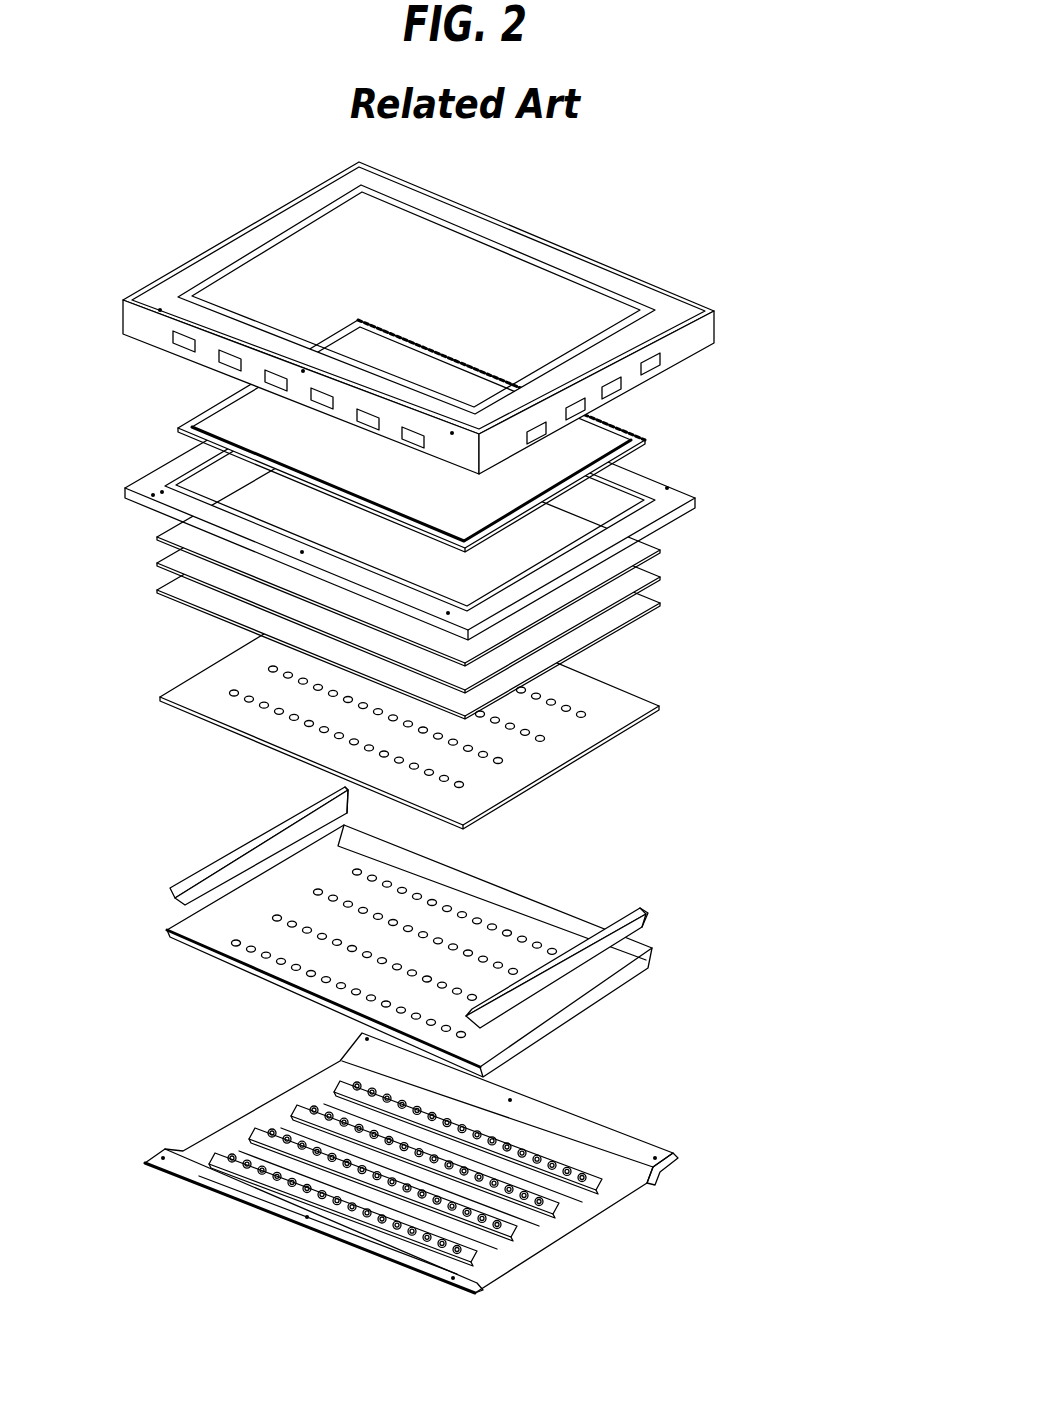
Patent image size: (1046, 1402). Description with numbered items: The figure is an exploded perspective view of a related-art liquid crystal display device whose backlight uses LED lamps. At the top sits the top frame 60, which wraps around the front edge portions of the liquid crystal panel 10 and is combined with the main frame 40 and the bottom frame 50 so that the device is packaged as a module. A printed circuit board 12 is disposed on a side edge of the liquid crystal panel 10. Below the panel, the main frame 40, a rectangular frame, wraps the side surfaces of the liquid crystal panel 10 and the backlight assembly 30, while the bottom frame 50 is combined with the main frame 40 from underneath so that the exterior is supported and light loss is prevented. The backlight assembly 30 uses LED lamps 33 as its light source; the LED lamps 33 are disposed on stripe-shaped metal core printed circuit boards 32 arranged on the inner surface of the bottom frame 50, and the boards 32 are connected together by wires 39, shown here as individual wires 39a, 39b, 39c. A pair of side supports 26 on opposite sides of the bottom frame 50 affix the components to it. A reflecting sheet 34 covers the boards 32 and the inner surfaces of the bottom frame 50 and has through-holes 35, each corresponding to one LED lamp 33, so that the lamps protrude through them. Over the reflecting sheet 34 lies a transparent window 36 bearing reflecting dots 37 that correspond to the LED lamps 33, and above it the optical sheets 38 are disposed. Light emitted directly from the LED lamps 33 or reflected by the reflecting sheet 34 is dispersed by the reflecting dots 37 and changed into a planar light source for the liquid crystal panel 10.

The liquid crystal panel 10 is at (668, 430).
The printed circuit board 12 is at (600, 417).
The side supports 26 is at (242, 864).
The backlight assembly 30 is at (463, 837).
The metal core printed circuit boards 32 is at (600, 1170).
The LED lamps 33 is at (553, 1160).
The reflecting sheet 34 is at (503, 898).
The through-holes 35 is at (417, 896).
The transparent window 36 is at (622, 734).
The reflecting dots 37 is at (542, 738).
The optical sheets 38 is at (683, 537).
The wires 39 is at (427, 1202).
The first mounting portion 39a is at (387, 1232).
The second mounting portion 39b is at (557, 1237).
The third mounting portion 39c is at (600, 1222).
The main frame 40 is at (444, 498).
The bottom frame 50 is at (657, 1178).
The top frame 60 is at (719, 330).